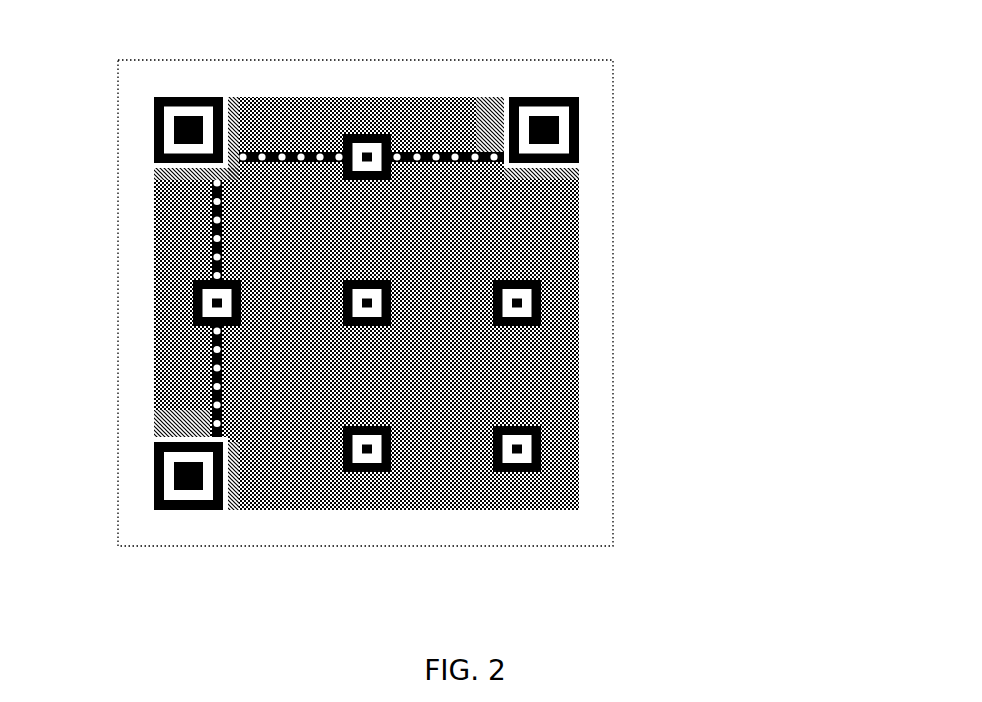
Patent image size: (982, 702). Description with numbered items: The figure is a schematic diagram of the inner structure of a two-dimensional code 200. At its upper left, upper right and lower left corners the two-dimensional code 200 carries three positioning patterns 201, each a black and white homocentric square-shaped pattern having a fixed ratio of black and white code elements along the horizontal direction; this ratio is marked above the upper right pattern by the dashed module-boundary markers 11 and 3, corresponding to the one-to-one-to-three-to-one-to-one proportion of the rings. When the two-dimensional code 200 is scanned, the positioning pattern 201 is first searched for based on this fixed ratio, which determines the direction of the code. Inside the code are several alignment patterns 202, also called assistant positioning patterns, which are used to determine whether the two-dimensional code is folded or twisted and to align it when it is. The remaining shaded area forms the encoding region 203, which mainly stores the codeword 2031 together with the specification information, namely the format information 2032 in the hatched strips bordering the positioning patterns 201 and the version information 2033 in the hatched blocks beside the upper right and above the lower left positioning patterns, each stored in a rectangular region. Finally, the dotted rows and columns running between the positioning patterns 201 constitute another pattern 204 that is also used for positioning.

The two-dimensional code 200 is at (615, 228).
The positioning pattern 201 is at (241, 40).
The alignment pattern 202 is at (516, 473).
The encoding region 203 is at (539, 321).
The another pattern used for positioning 204 is at (213, 253).
The codeword 2031 is at (453, 490).
The format information 2032 is at (232, 174).
The version information 2033 is at (493, 157).
The module width ratio of positioning pattern 11 is at (575, 94).
The module width ratio of positioning pattern 3 is at (531, 94).